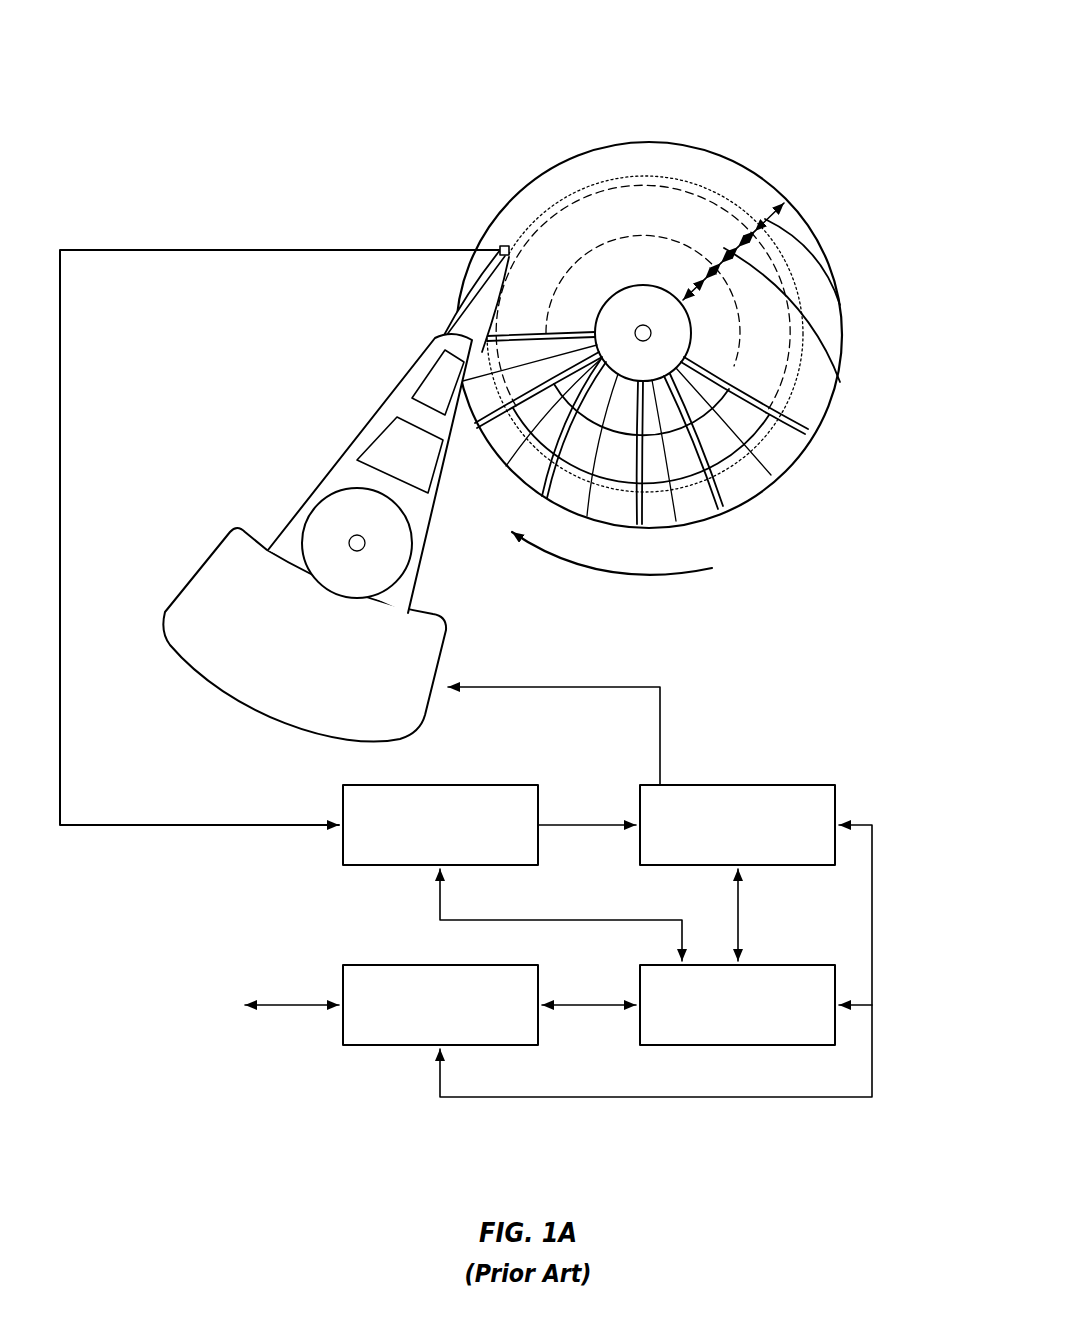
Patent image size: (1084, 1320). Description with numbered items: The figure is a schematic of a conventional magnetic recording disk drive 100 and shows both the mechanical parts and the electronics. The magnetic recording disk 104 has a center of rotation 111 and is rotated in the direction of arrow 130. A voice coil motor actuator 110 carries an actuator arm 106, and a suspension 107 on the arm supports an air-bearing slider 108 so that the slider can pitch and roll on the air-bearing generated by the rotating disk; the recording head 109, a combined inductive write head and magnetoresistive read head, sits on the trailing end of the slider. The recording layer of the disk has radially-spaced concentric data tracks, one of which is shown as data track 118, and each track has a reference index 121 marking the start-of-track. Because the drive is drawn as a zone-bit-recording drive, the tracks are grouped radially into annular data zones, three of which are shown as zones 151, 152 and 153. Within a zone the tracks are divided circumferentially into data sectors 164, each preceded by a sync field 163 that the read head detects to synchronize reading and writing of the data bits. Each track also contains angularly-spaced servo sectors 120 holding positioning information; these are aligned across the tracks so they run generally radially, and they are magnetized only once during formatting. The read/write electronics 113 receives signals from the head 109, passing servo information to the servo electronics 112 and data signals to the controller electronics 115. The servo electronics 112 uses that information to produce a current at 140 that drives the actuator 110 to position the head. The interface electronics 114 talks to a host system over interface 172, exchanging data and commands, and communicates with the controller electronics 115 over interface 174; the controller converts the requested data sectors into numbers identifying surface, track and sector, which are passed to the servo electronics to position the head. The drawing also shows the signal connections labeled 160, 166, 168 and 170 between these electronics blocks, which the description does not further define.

The disk drive 100 is at (172, 62).
The magnetic recording disk 104 is at (587, 143).
The actuator arm 106 is at (417, 360).
The suspension 107 is at (470, 309).
The air-bearing slider 108 is at (503, 248).
The recording head 109 is at (513, 237).
The voice coil motor actuator 110 is at (228, 535).
The center of rotation 111 is at (642, 331).
The servo electronics 112 is at (810, 784).
The read/write electronics 113 is at (512, 784).
The interface electronics 114 is at (368, 965).
The controller electronics 115 is at (663, 1046).
The data track 118 is at (724, 195).
The servo sectors 120 is at (742, 503).
The reference index 121 is at (798, 428).
The direction of rotation 130 is at (648, 588).
The current 140 is at (665, 706).
The data zone 151 is at (840, 306).
The data zone 152 is at (843, 383).
The data zone 153 is at (688, 278).
The servo control signal path 160 is at (742, 923).
The sync fields 163 is at (768, 466).
The data sectors 164 is at (787, 459).
The read signal 166 is at (592, 829).
The data signal path 168 is at (618, 920).
The control signal path 170 is at (876, 921).
The interface 172 is at (263, 1003).
The interface 174 is at (593, 1004).